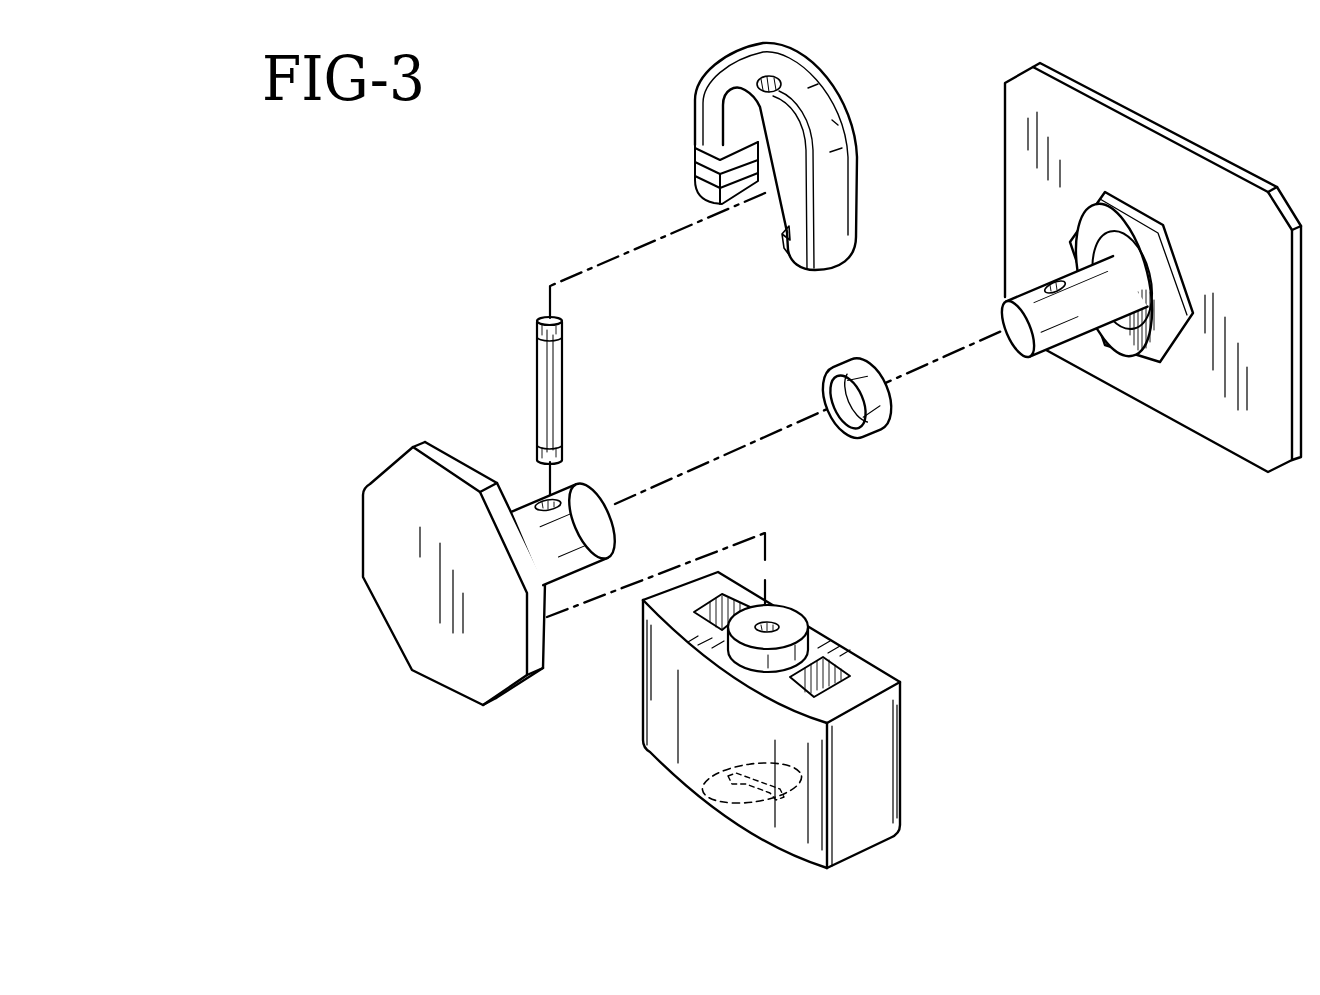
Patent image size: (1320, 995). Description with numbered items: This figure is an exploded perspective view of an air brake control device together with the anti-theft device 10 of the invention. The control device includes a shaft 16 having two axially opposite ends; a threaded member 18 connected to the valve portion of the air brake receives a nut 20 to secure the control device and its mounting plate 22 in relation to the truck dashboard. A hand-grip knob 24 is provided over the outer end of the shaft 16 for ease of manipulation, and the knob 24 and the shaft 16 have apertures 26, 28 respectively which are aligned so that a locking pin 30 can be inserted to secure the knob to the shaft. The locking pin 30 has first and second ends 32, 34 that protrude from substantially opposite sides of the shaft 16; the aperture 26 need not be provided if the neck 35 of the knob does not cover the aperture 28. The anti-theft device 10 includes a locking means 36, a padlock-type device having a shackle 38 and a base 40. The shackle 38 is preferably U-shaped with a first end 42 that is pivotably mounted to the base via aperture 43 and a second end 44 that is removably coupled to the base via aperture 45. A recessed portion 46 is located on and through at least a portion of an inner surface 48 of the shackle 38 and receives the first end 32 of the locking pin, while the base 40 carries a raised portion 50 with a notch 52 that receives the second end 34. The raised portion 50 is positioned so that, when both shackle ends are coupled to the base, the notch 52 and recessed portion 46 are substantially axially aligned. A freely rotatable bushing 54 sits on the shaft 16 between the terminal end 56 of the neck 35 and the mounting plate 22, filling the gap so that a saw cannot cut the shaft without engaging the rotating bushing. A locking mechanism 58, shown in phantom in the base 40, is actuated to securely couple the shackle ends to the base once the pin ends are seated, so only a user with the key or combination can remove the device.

The anti-theft device 10 is at (352, 290).
The shaft 16 is at (1056, 323).
The threaded member 18 is at (1153, 270).
The nut 20 is at (1125, 207).
The mounting plate 22 is at (1025, 140).
The hand-grip knob 24 is at (408, 623).
The aperture 26 is at (560, 495).
The aperture 28 is at (1048, 274).
The locking pin 30 is at (512, 386).
The first end of locking pin 32 is at (543, 333).
The second end of locking pin 34 is at (537, 452).
The neck 35 is at (592, 502).
The locking means 36 is at (770, 447).
The shackle 38 is at (779, 168).
The base 40 is at (784, 696).
The first end of shackle 42 is at (788, 238).
The aperture 43 is at (840, 680).
The second end of shackle 44 is at (732, 194).
The aperture 45 is at (695, 600).
The recessed portion 46 is at (794, 84).
The inner surface 48 is at (740, 128).
The raised portion 50 is at (811, 598).
The notch 52 is at (770, 620).
The bushing 54 is at (883, 402).
The terminal end of neck 56 is at (605, 492).
The locking mechanism 58 is at (733, 805).